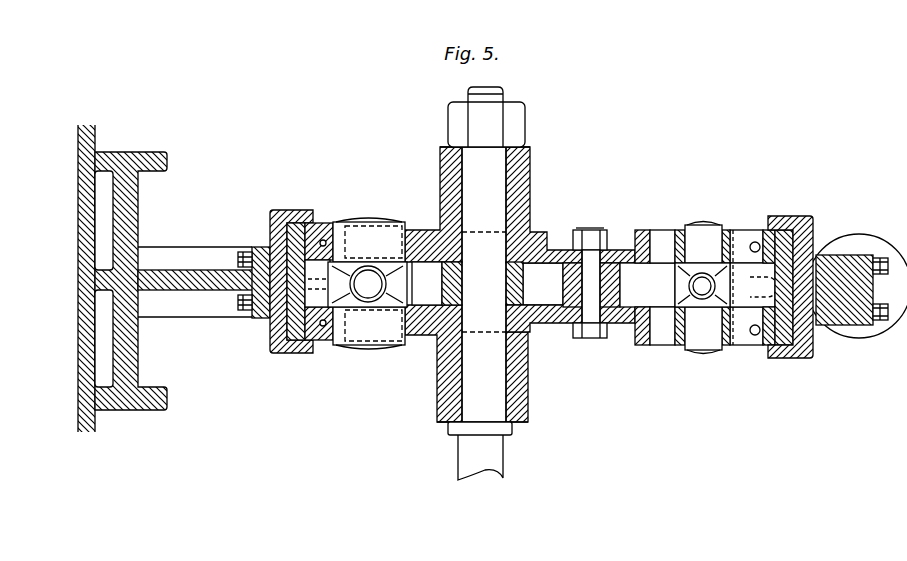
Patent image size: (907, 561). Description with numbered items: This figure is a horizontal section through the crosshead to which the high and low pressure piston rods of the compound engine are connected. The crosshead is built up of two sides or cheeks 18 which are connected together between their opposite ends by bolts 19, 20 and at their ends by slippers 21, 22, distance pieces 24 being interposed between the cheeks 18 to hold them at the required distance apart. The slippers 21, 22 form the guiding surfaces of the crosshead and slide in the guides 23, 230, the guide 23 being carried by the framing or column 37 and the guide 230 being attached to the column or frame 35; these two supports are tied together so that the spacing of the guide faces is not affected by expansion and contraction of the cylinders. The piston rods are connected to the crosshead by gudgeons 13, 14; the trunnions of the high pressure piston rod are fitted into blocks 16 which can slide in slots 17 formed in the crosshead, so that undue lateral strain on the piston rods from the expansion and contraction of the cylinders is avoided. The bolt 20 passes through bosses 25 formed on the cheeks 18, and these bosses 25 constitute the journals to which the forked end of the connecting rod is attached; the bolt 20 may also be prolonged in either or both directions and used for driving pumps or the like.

The framing or column 37 is at (183, 305).
The guide 23 is at (273, 209).
The slipper 21 is at (300, 222).
The sides or cheeks 18 is at (425, 313).
The gudgeon 14 is at (369, 283).
The bosses 25 is at (440, 165).
The distance pieces 24 is at (461, 283).
The bolt 20 is at (486, 283).
The bolt 19 is at (590, 270).
The slots 17 is at (659, 237).
The blocks 16 is at (726, 240).
The gudgeon 13 is at (703, 288).
The slipper 22 is at (785, 228).
The guide 230 is at (802, 359).
The column or frame 35 is at (847, 257).